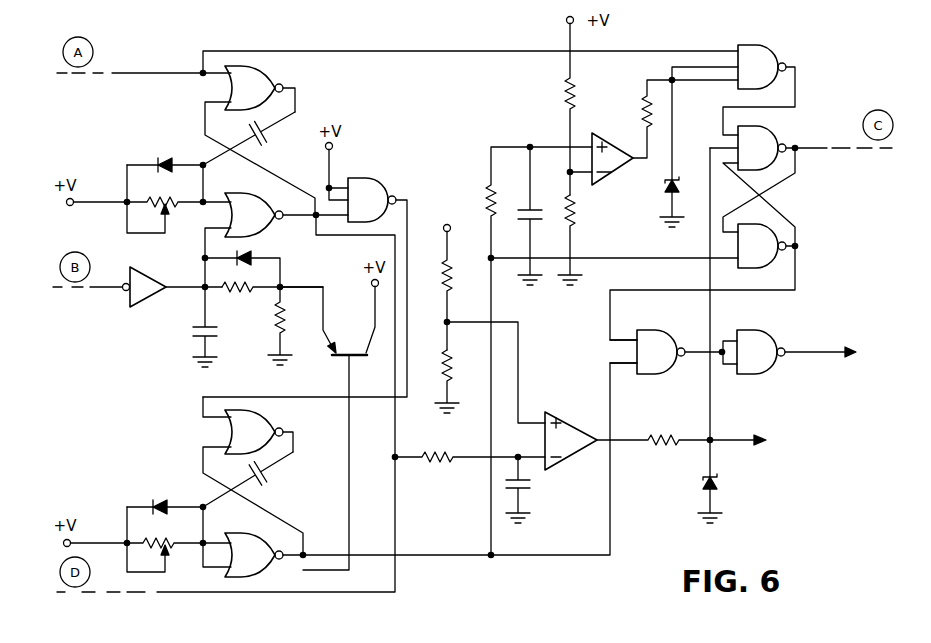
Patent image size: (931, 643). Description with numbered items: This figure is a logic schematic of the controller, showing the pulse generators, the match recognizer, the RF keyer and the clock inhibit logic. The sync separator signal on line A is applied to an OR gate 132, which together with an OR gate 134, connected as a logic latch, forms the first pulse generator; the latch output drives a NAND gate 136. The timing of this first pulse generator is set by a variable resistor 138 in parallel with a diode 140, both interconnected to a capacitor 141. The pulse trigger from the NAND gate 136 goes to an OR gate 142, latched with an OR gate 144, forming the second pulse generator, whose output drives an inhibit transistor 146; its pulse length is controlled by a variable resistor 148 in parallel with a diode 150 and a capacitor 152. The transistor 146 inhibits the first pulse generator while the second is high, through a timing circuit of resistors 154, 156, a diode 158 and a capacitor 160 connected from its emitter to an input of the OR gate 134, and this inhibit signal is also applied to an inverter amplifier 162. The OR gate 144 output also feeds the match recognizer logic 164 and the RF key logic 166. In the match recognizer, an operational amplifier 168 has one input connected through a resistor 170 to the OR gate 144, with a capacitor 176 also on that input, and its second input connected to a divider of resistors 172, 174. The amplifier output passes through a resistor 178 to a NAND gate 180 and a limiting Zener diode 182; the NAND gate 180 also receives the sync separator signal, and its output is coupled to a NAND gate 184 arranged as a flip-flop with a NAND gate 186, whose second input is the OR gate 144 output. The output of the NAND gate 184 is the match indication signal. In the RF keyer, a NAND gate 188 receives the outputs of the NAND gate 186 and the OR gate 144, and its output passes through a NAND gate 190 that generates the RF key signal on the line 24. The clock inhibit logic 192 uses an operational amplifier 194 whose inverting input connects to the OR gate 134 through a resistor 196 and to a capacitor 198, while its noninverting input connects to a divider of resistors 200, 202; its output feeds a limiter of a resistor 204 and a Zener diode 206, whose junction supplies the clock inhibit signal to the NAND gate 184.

The line 24 is at (820, 356).
The OR gate 132 is at (252, 79).
The OR gate 134 is at (257, 194).
The NAND gate 136 is at (372, 193).
The variable resistor 138 is at (176, 197).
The diode 140 is at (167, 160).
The capacitor 141 is at (276, 131).
The OR gate 142 is at (258, 425).
The OR gate 144 is at (250, 545).
The inhibit transistor 146 is at (338, 348).
The variable resistor 148 is at (163, 533).
The diode 150 is at (163, 502).
The capacitor 152 is at (272, 474).
The resistor 154 is at (258, 289).
The resistor 156 is at (273, 317).
The diode 158 is at (256, 256).
The capacitor 160 is at (192, 331).
The inverter amplifier 162 is at (150, 281).
The match recognizer logic 164 is at (618, 176).
The RF key logic 166 is at (701, 354).
The operational amplifier 168 is at (608, 161).
The resistor 170 is at (486, 198).
The resistor 172 is at (563, 88).
The resistor 174 is at (578, 228).
The capacitor 176 is at (522, 208).
The resistor 178 is at (642, 104).
The NAND gate 180 is at (763, 56).
The Zener diode 182 is at (682, 170).
The NAND gate 184 is at (763, 143).
The NAND gate 186 is at (755, 237).
The NAND gate 188 is at (647, 349).
The NAND gate 190 is at (760, 347).
The clock inhibit logic 192 is at (560, 445).
The operational amplifier 194 is at (572, 438).
The resistor 196 is at (442, 463).
The capacitor 198 is at (534, 485).
The resistor 200 is at (441, 262).
The resistor 202 is at (445, 373).
The resistor 204 is at (673, 447).
The Zener diode 206 is at (702, 478).